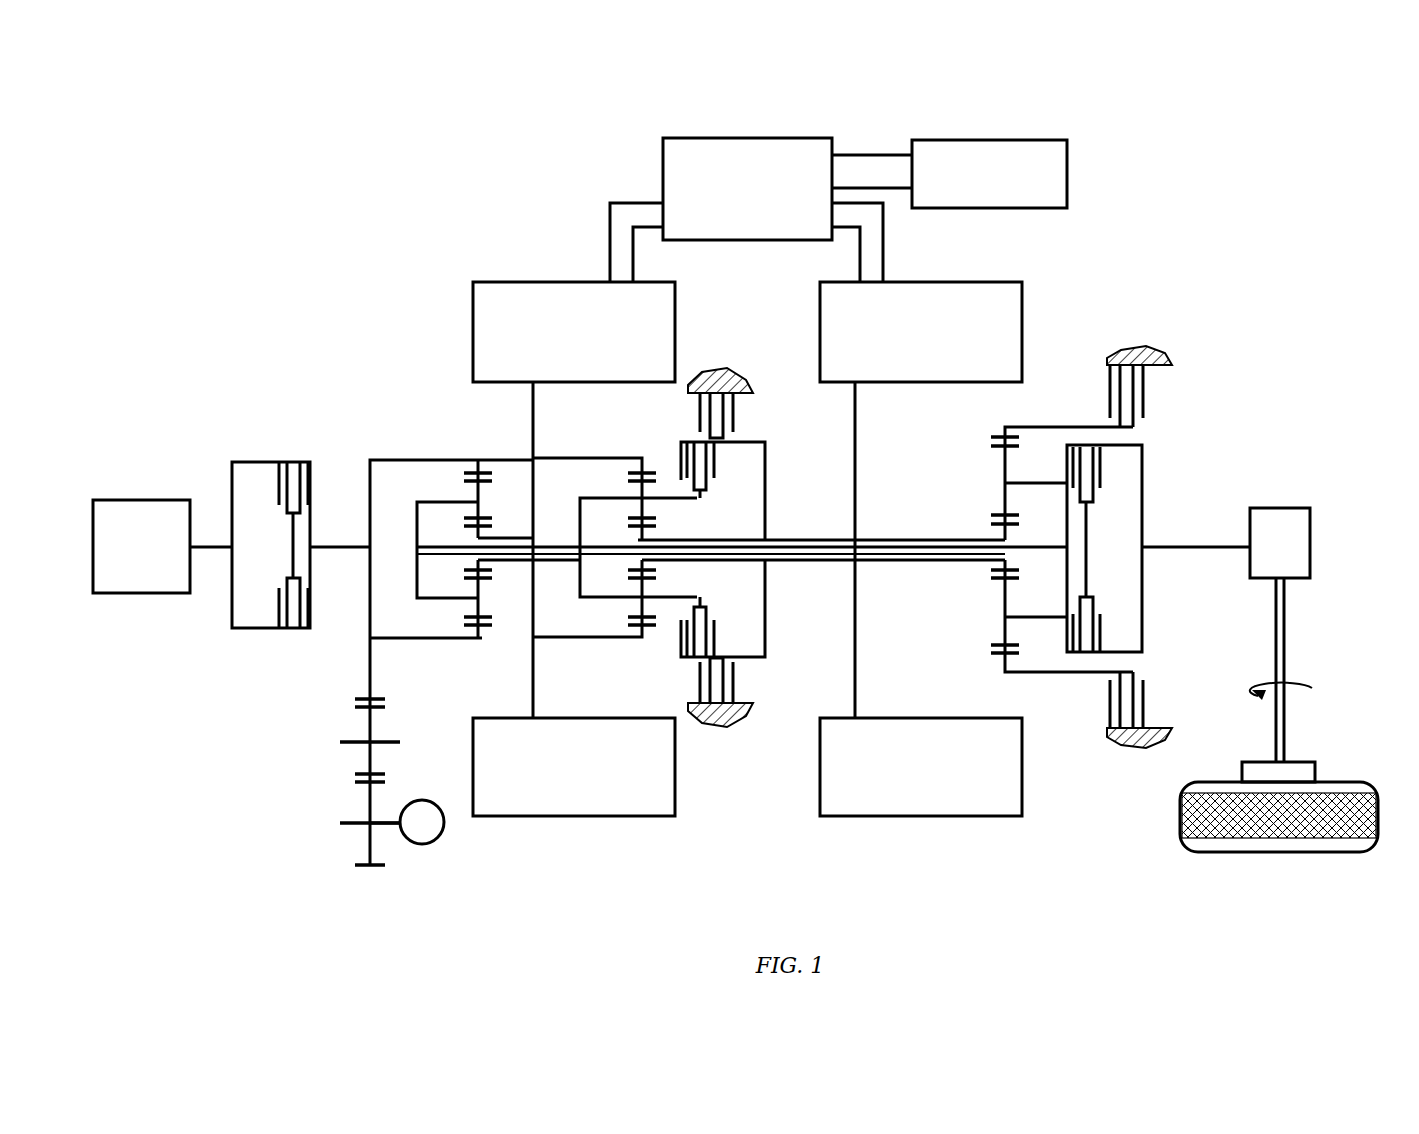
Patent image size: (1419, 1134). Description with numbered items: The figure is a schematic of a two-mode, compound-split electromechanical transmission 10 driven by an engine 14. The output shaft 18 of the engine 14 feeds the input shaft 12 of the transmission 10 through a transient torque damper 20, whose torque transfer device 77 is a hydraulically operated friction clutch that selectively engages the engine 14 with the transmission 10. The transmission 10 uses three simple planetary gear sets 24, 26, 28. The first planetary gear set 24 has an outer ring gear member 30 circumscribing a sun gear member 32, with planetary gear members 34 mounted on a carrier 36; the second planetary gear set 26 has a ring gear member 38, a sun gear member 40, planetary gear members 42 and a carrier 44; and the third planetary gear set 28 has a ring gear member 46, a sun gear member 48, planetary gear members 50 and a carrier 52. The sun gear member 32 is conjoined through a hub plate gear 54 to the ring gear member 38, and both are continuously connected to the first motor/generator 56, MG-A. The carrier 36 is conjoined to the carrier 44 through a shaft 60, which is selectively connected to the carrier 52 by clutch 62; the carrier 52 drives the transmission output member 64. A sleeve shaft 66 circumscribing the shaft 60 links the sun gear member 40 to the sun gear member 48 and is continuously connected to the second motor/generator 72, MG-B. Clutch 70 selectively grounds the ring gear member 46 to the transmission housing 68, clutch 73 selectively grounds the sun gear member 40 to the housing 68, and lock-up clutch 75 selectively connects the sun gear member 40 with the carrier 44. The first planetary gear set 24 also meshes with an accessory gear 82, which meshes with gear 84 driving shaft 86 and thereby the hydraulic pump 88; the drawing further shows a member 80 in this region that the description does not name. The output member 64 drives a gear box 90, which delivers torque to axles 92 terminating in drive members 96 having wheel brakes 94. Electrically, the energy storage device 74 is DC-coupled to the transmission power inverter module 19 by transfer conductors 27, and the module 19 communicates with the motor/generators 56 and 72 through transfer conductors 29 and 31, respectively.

The transmission 10 is at (428, 240).
The input shaft 12 is at (356, 546).
The engine 14 is at (152, 500).
The output shaft 18 is at (212, 546).
The transmission power inverter module 19 is at (663, 158).
The transient torque damper 20 is at (271, 510).
The first planetary gear set 24 is at (470, 535).
The second planetary gear set 26 is at (625, 544).
The transfer conductors 27 is at (870, 155).
The third planetary gear set 28 is at (1022, 529).
The transfer conductors 29 is at (610, 242).
The outer ring gear member 30 is at (490, 470).
The transfer conductors 31 is at (885, 240).
The inner sun gear member 32 is at (483, 524).
The planetary gear members 34 is at (478, 490).
The carrier 36 is at (417, 572).
The outer ring gear member 38 is at (647, 470).
The inner sun gear member 40 is at (647, 533).
The planetary gear members 42 is at (642, 492).
The carrier 44 is at (580, 577).
The outer ring gear member 46 is at (991, 437).
The inner sun gear member 48 is at (991, 524).
The planetary gear members 50 is at (991, 447).
The carrier 52 is at (1142, 537).
The hub plate gear 54 is at (533, 517).
The motor/generator 56 is at (473, 318).
The shaft 60 is at (833, 546).
The clutch C2 62 is at (1112, 472).
The transmission output member 64 is at (1228, 540).
The sleeve shaft 66 is at (803, 540).
The transmission housing 68 is at (713, 368).
The clutch C1 70 is at (1091, 382).
The motor/generator 72 is at (1022, 298).
The clutch C3 73 is at (746, 416).
The electrical energy storage device 74 is at (1068, 160).
The clutch C4 75 is at (722, 472).
The torque transfer device 77 is at (274, 497).
The countershaft 80 is at (370, 615).
The accessory gear 82 is at (365, 735).
The gear 84 is at (365, 840).
The shaft 86 is at (388, 828).
The hydraulic pump 88 is at (436, 840).
The gear box 90 is at (1247, 565).
The vehicular axles 92 is at (1287, 652).
The wheel brake 94 is at (1317, 768).
The drive members 96 is at (1205, 845).